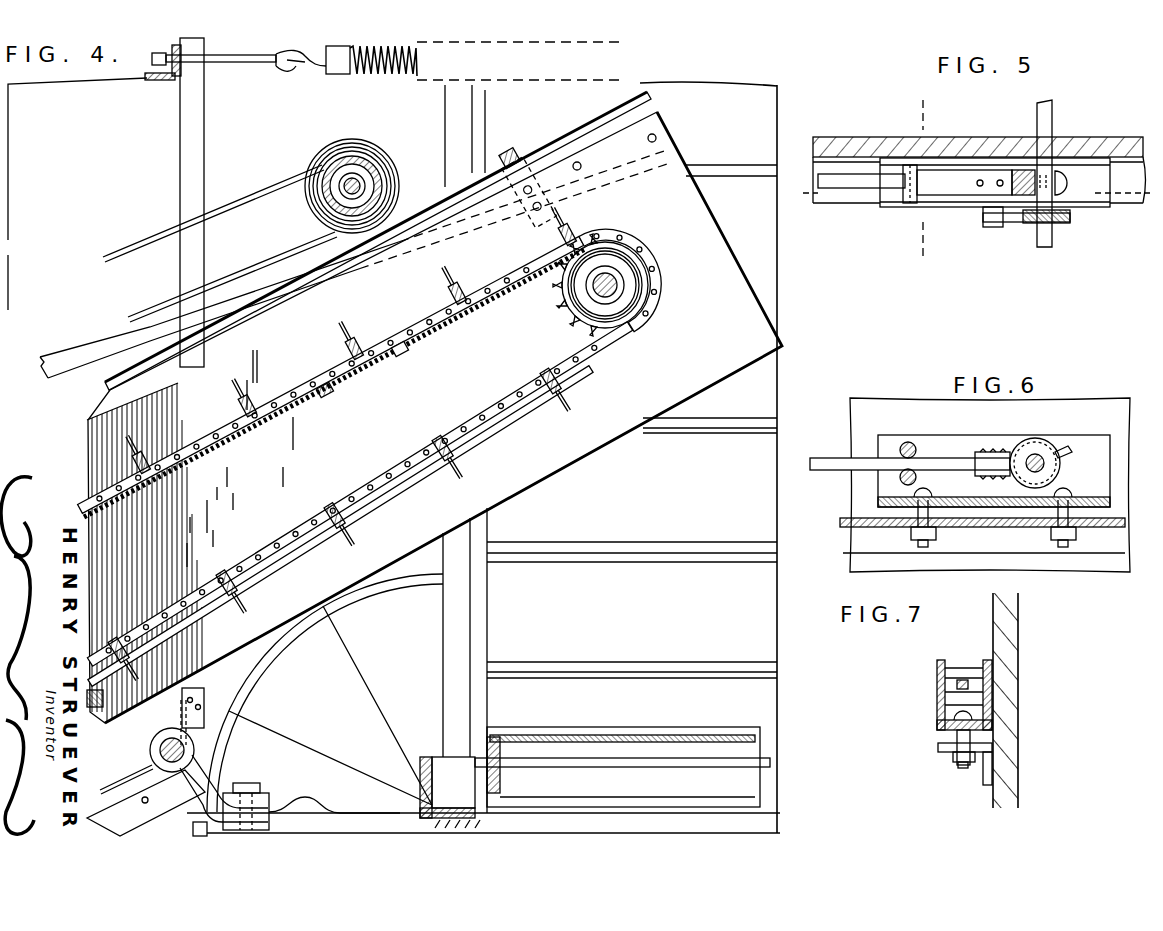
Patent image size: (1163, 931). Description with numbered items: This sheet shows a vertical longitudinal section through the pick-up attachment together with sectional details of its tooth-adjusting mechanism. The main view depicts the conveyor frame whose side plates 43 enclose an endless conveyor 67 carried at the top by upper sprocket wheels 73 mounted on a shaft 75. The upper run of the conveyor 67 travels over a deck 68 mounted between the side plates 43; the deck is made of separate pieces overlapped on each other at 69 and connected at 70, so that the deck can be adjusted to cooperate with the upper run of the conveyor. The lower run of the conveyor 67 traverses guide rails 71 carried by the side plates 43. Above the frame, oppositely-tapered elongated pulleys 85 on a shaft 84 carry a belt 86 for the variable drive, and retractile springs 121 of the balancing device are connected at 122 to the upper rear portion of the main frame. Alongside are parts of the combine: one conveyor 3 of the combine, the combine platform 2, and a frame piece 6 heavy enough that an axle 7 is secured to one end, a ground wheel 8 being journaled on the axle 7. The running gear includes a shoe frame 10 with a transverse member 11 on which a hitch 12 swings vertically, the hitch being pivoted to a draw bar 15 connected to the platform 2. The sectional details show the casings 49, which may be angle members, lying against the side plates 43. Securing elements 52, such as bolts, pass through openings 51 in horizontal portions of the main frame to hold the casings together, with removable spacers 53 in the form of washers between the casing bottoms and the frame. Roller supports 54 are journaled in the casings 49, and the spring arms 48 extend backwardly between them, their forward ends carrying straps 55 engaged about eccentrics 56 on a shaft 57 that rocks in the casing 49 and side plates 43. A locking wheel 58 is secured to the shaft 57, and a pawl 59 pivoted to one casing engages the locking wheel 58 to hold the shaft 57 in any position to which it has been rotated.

In FIG. 4, the combine platform 2 is at (781, 830).
In FIG. 4, the conveyor 3 is at (742, 97).
In FIG. 4, the frame piece 6 is at (422, 757).
In FIG. 5, the frame piece 6 is at (970, 192).
In FIG. 4, the axle 7 is at (383, 817).
In FIG. 5, the axle 7 is at (919, 181).
In FIG. 4, the ground wheel 8 is at (288, 652).
In FIG. 4, the shoe frame 10 is at (146, 803).
In FIG. 4, the transverse member 11 is at (150, 748).
In FIG. 4, the hitch 12 is at (217, 787).
In FIG. 4, the draw bar 15 is at (307, 820).
In FIG. 4, the side plates 43 is at (593, 447).
In FIG. 5, the side plates 43 is at (1090, 141).
In FIG. 6, the side plates 43 is at (1107, 396).
In FIG. 7, the side plates 43 is at (1013, 671).
In FIG. 5, the spring arms 48 is at (855, 185).
In FIG. 6, the spring arms 48 is at (833, 458).
In FIG. 7, the spring arms 48 is at (953, 685).
In FIG. 5, the casings 49 is at (979, 182).
In FIG. 6, the casings 49 is at (994, 471).
In FIG. 7, the casings 49 is at (937, 700).
In FIG. 6, the openings 51 is at (867, 525).
In FIG. 6, the securing elements 52 is at (930, 541).
In FIG. 7, the securing elements 52 is at (963, 765).
In FIG. 6, the removable spacers 53 is at (897, 525).
In FIG. 5, the roller supports 54 is at (908, 202).
In FIG. 6, the roller supports 54 is at (900, 480).
In FIG. 7, the roller supports 54 is at (963, 674).
In FIG. 6, the straps 55 is at (1062, 450).
In FIG. 6, the eccentrics 56 is at (1023, 449).
In FIG. 5, the shaft 57 is at (1050, 114).
In FIG. 6, the shaft 57 is at (1040, 455).
In FIG. 5, the locking wheel 58 is at (1068, 219).
In FIG. 5, the pawl 59 is at (1003, 224).
In FIG. 4, the endless conveyor 67 is at (303, 403).
In FIG. 4, the deck 68 is at (183, 462).
In FIG. 4, the overlap 69 is at (370, 378).
In FIG. 4, the connection 70 is at (405, 354).
In FIG. 4, the guide rails 71 is at (413, 487).
In FIG. 4, the upper sprocket wheels 73 is at (591, 290).
In FIG. 4, the shaft 75 is at (610, 273).
In FIG. 4, the shaft 84 is at (350, 183).
In FIG. 4, the oppositely-tapered elongated pulleys 85 is at (370, 153).
In FIG. 4, the belt 86 is at (243, 202).
In FIG. 4, the retractile springs 121 is at (374, 75).
In FIG. 4, the connection 122 is at (313, 72).